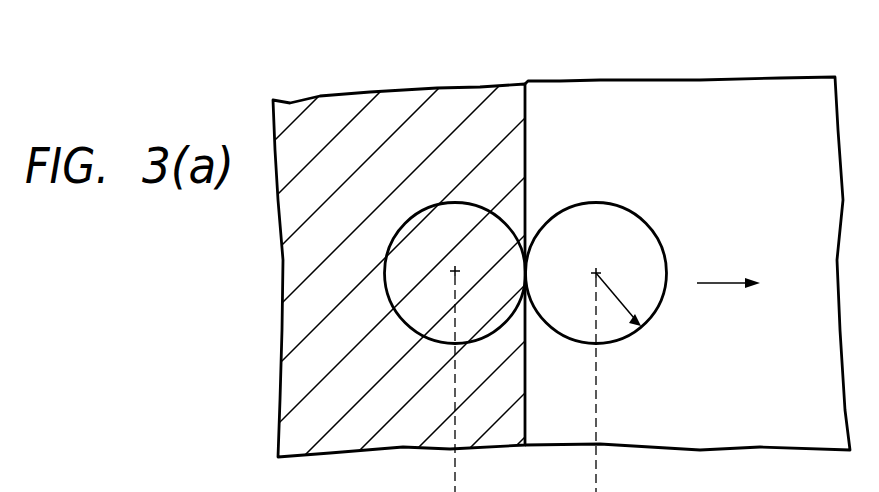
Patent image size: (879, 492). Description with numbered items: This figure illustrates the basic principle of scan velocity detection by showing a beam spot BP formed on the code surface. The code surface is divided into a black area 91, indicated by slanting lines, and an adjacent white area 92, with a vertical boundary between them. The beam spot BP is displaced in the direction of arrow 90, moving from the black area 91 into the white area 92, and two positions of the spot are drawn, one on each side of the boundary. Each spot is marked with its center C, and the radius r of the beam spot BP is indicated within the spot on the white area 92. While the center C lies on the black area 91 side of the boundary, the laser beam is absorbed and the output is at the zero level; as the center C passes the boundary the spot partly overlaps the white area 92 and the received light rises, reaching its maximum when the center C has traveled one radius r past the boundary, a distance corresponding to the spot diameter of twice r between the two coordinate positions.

The black area 91 is at (441, 108).
The white area 92 is at (778, 92).
The arrow 90 is at (727, 283).
The beam spot BP is at (493, 232).
The center of the beam spot C is at (453, 269).
The radius of the beam spot r is at (614, 303).